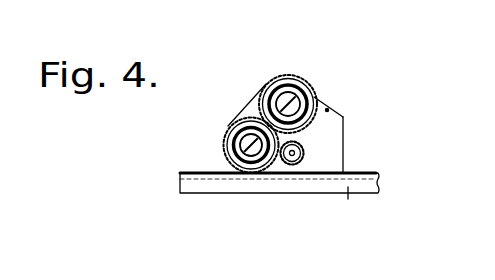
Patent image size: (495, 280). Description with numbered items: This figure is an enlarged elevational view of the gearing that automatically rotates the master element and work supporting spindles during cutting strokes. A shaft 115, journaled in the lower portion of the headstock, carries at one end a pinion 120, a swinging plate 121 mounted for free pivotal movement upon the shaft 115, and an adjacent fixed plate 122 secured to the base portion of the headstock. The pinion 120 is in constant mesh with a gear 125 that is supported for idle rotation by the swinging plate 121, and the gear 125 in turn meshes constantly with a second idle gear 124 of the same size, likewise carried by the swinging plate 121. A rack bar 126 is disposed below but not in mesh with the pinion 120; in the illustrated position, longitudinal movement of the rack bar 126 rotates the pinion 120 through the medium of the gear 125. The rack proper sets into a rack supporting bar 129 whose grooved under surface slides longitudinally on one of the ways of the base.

The shaft 115 is at (292, 176).
The pinion 120 is at (307, 145).
The swinging plate 121 is at (257, 105).
The fixed plate 122 is at (339, 117).
The second idle gear 124 is at (295, 77).
The gear 125 is at (226, 134).
The rack bar 126 is at (310, 169).
The rack supporting bar 129 is at (352, 211).